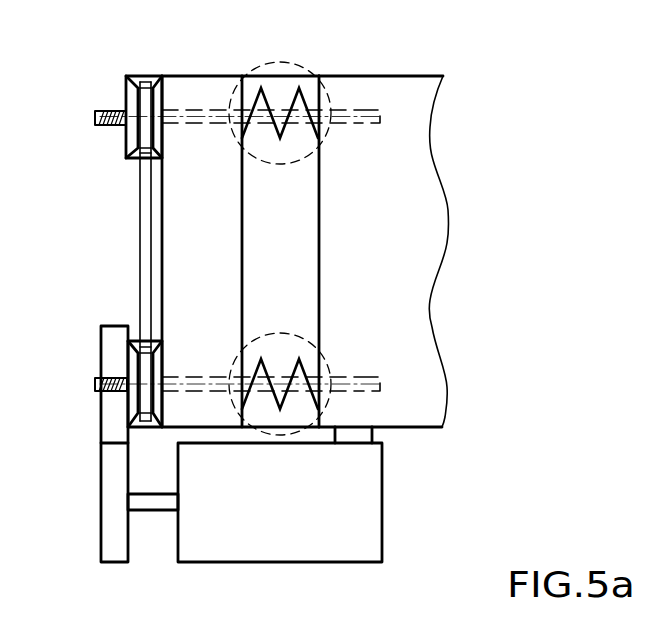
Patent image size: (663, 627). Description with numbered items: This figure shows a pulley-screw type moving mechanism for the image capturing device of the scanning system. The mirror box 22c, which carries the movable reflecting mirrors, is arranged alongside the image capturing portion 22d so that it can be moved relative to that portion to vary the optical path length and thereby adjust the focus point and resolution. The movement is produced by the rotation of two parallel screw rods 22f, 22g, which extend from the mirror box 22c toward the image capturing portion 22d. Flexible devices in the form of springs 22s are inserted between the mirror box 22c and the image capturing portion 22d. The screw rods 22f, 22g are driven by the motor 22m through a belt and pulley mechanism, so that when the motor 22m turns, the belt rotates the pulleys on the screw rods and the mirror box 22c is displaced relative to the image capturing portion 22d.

The mirror box 22c is at (198, 75).
The image capturing portion 22d is at (380, 75).
The springs 22s is at (278, 62).
The screw rod 22f is at (93, 117).
The screw rod 22g is at (93, 384).
The motor 22m is at (373, 502).